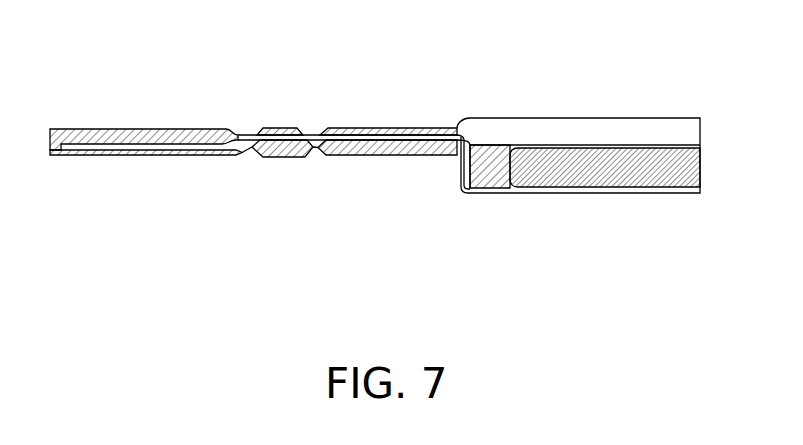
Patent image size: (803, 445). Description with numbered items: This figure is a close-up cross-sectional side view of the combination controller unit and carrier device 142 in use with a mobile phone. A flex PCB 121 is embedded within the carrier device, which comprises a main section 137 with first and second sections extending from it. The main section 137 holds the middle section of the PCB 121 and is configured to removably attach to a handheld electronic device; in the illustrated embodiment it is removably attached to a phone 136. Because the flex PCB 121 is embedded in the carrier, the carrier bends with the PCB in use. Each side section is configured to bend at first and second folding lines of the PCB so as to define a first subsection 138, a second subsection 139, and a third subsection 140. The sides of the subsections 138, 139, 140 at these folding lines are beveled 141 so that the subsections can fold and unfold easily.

The third subsection 140 is at (113, 138).
The flex PCB 121 is at (160, 151).
The beveled sides 141 is at (248, 153).
The second subsection 139 is at (283, 150).
The first subsection 138 is at (406, 148).
The main section 137 is at (490, 172).
The phone 136 is at (598, 165).
The combination controller unit and carrier device 142 is at (497, 72).